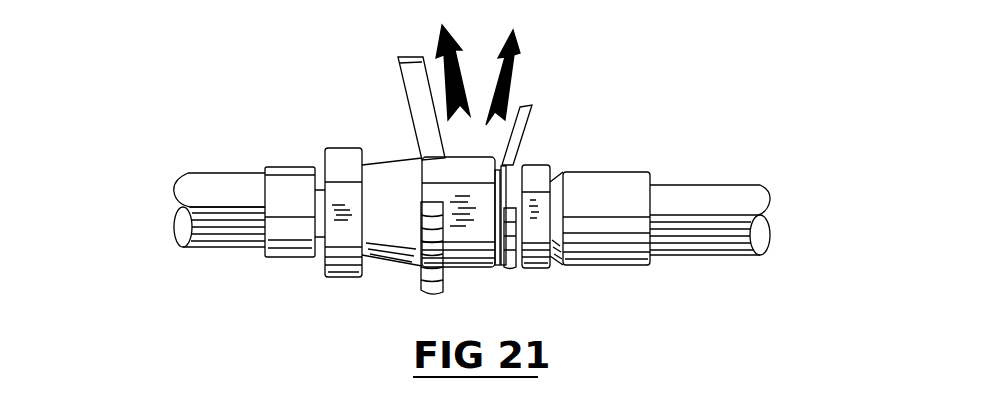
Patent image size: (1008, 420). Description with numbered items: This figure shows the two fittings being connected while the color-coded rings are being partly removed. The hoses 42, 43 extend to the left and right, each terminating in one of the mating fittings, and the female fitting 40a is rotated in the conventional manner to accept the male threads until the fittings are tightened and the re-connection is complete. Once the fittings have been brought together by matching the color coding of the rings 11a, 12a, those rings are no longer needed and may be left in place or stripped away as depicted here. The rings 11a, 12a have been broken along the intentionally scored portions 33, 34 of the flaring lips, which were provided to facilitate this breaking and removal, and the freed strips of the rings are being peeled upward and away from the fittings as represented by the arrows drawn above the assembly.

The color coding ring 11a is at (421, 151).
The color coding ring 12a is at (540, 133).
The scored portion of lip 33 is at (401, 56).
The scored portion of lip 34 is at (527, 107).
The female fitting 40a is at (467, 268).
The hose 42 is at (203, 172).
The hose 43 is at (712, 184).